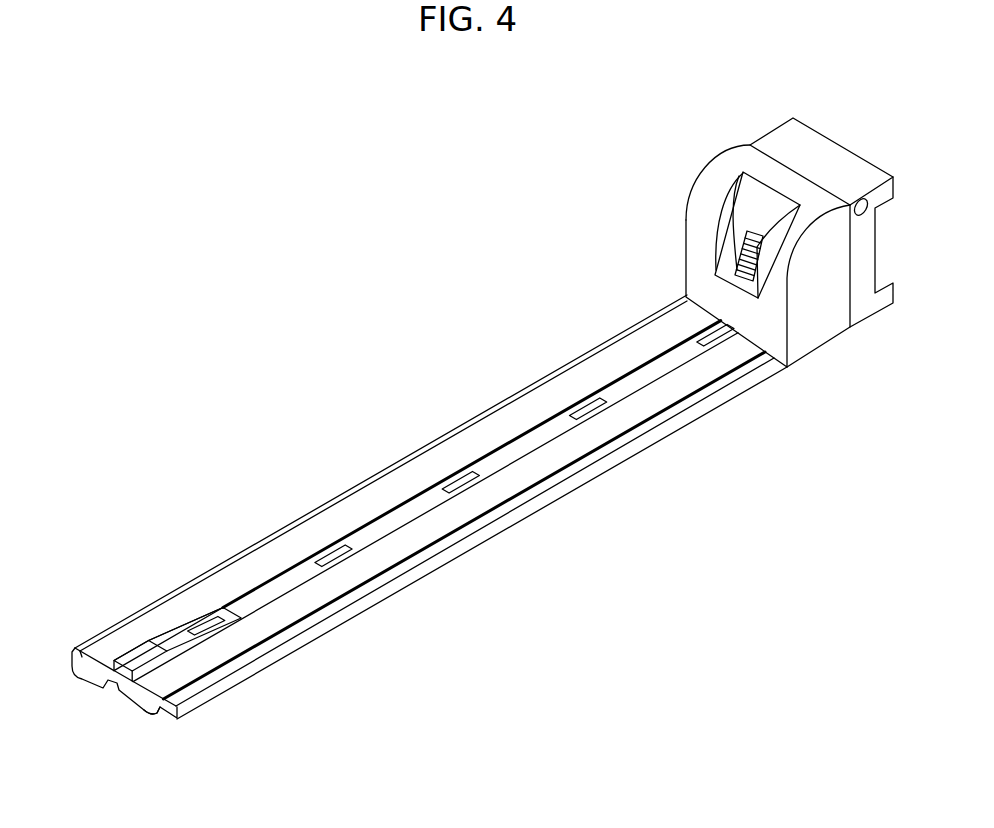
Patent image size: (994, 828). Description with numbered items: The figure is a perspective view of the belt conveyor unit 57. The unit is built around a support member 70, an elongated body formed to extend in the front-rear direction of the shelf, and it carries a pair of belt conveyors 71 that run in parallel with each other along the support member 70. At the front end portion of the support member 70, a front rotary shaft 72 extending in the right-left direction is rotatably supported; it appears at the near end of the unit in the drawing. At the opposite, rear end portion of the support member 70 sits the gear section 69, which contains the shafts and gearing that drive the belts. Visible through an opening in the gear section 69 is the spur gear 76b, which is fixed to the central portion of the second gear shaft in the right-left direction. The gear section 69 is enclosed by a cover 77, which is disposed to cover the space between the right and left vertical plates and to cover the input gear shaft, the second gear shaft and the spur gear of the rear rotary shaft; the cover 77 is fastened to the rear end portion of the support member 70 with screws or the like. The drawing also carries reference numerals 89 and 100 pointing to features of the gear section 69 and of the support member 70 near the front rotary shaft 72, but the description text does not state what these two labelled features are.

The belt conveyor unit 57 is at (536, 357).
The gear section 69 is at (813, 368).
The support member 70 is at (490, 532).
The belt conveyors 71 is at (240, 580).
The front rotary shaft 72 is at (162, 718).
The spur gear 76b is at (755, 245).
The cover 77 is at (718, 187).
The opening / curved inner surface 89 is at (760, 200).
The slider / stopper 100 is at (127, 667).